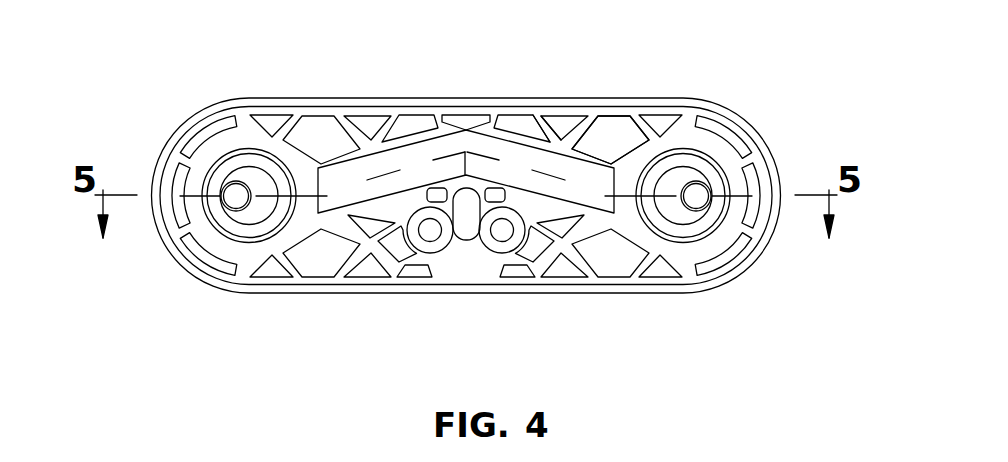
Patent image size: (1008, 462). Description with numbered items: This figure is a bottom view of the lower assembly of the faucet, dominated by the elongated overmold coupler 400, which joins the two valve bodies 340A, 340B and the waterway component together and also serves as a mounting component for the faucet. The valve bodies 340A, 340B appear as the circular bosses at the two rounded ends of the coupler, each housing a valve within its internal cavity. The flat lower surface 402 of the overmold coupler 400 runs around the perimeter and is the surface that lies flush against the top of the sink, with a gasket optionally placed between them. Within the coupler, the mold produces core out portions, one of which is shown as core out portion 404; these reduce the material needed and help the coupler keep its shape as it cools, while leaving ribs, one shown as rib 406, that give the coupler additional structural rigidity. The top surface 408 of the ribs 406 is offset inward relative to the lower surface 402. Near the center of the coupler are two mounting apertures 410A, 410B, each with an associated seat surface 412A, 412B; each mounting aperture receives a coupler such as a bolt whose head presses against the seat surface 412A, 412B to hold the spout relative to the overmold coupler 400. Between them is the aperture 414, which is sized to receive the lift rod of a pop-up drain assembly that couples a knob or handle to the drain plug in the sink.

The overmold coupler 400 is at (732, 97).
The lower surface 402 is at (667, 104).
The core out portion 404 is at (517, 128).
The rib 406 is at (557, 131).
The top surface of ribs 408 is at (536, 124).
The valve body 340A is at (248, 168).
The valve body 340B is at (708, 175).
The mounting aperture 410A is at (412, 262).
The mounting aperture 410B is at (509, 254).
The seat surface 412A is at (431, 244).
The seat surface 412B is at (518, 238).
The aperture 414 is at (466, 234).